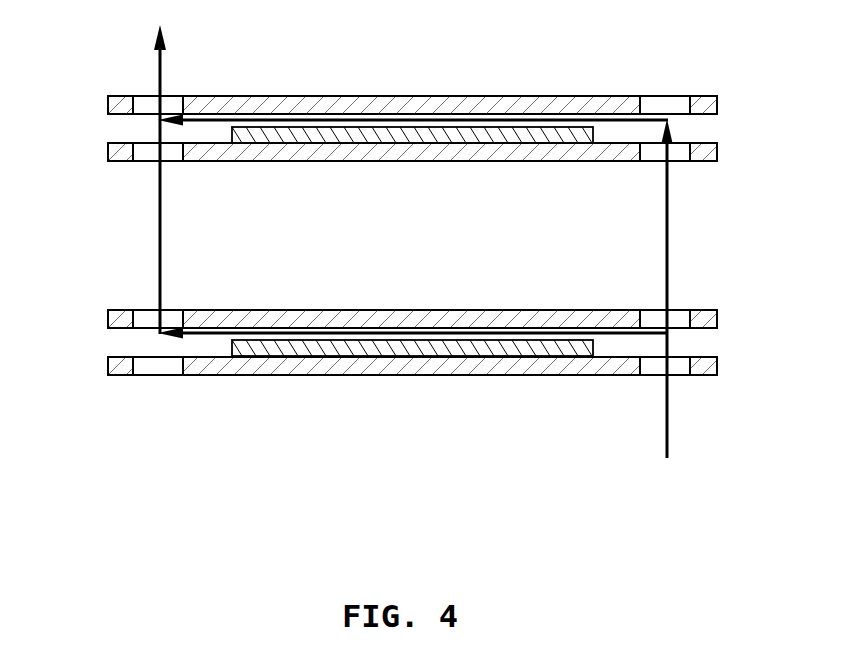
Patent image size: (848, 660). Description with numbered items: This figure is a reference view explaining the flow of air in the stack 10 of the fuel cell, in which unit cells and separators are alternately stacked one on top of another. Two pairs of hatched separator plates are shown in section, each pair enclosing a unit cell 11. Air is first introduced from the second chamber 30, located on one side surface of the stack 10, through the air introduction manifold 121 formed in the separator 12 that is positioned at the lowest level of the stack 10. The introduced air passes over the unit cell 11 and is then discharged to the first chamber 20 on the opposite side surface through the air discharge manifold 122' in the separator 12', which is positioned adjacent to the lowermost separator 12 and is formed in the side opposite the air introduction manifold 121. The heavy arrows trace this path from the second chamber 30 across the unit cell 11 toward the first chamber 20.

The stack 10 is at (64, 40).
The unit cell 11 is at (508, 353).
The separator 12 is at (412, 420).
The separator 12' is at (412, 278).
The air introduction manifold 121 is at (676, 368).
The air discharge manifold 122' is at (124, 278).
The first chamber 20 is at (157, 167).
The second chamber 30 is at (663, 309).